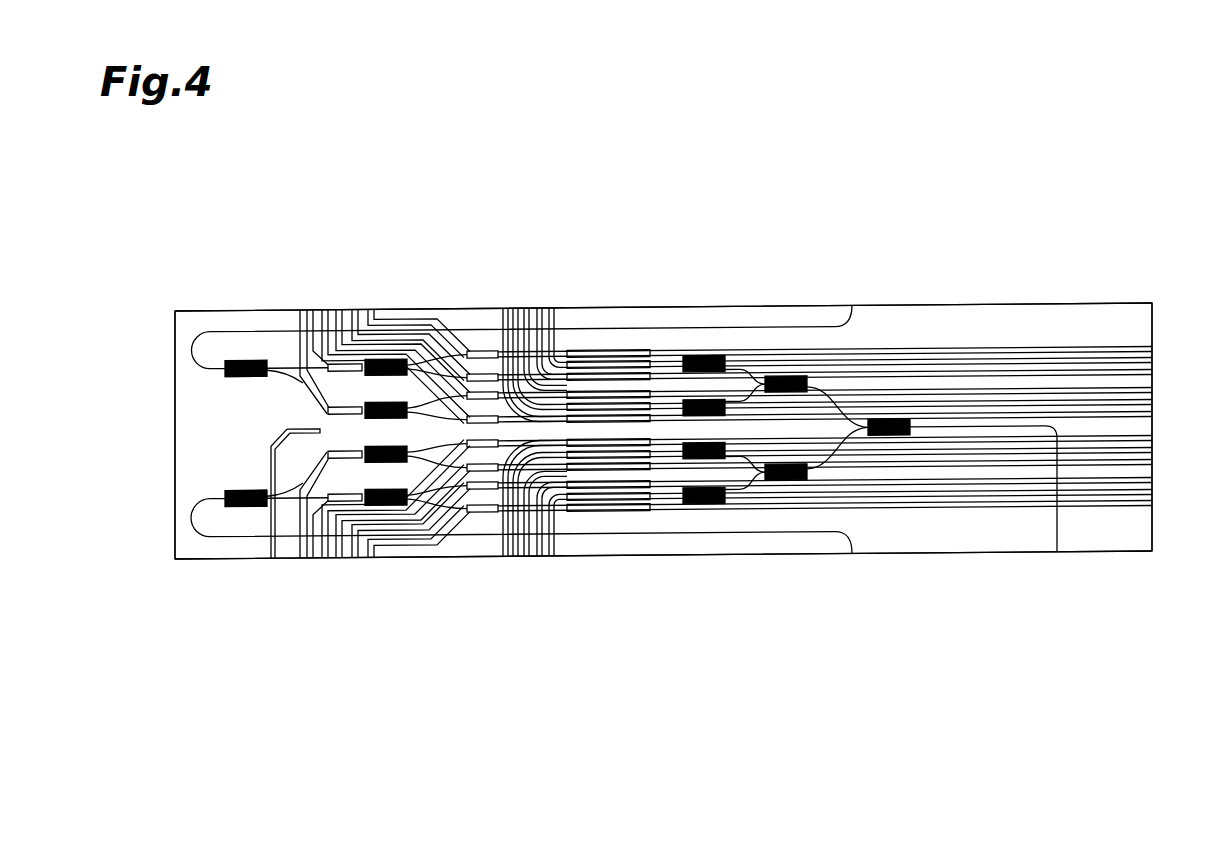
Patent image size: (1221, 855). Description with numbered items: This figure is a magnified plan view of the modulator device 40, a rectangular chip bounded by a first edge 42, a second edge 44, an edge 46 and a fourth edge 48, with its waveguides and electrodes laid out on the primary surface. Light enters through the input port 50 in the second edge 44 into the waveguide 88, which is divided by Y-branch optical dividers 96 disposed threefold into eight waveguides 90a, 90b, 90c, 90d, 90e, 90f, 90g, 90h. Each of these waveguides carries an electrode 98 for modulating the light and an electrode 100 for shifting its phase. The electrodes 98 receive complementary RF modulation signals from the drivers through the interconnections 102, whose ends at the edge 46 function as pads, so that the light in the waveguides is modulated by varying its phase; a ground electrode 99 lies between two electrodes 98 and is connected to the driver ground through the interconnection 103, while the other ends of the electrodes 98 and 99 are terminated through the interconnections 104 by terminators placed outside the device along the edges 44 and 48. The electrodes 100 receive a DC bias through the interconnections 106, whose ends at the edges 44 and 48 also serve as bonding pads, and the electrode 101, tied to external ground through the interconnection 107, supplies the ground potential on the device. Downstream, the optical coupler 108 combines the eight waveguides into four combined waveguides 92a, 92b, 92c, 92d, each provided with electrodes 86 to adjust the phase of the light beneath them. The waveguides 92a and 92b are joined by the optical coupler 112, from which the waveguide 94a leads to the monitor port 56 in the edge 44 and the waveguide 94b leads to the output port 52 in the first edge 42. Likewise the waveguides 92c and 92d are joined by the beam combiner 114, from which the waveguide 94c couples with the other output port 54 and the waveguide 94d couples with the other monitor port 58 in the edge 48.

The modulator device 40 is at (1089, 262).
The first edge 42 is at (172, 426).
The second edge 44 is at (962, 553).
The edge 46 is at (1155, 322).
The fourth edge 48 is at (962, 300).
The input port 50 is at (1057, 552).
The output port 52 is at (210, 500).
The output port 54 is at (210, 368).
The monitor port 56 is at (852, 554).
The monitor port 58 is at (852, 300).
The electrode 86 is at (342, 414).
The waveguide 88 is at (1060, 527).
The waveguide 90a is at (658, 509).
The waveguide 90b is at (680, 505).
The waveguide 90c is at (563, 517).
The waveguide 90d is at (583, 520).
The waveguide 90e is at (567, 410).
The waveguide 90f is at (560, 396).
The waveguide 90g is at (670, 352).
The waveguide 90h is at (657, 353).
The combined waveguide 92a is at (287, 503).
The combined waveguide 92b is at (297, 487).
The combined waveguide 92c is at (283, 378).
The combined waveguide 92d is at (287, 362).
The waveguide 94a is at (212, 558).
The waveguide 94b is at (192, 500).
The waveguide 94c is at (188, 362).
The waveguide 94d is at (231, 331).
The Y-branch optical divider 96 is at (893, 438).
The electrode 98 is at (650, 500).
The ground electrode 99 is at (637, 505).
The electrode 100 is at (480, 517).
The electrode 101 is at (305, 428).
The interconnection 102 is at (1148, 480).
The interconnection 103 is at (1148, 492).
The interconnection 104 is at (557, 308).
The interconnection 106 is at (390, 308).
The interconnection 107 is at (273, 558).
The optical coupler 108 is at (400, 505).
The optical coupler 112 is at (228, 494).
The beam combiner 114 is at (232, 377).